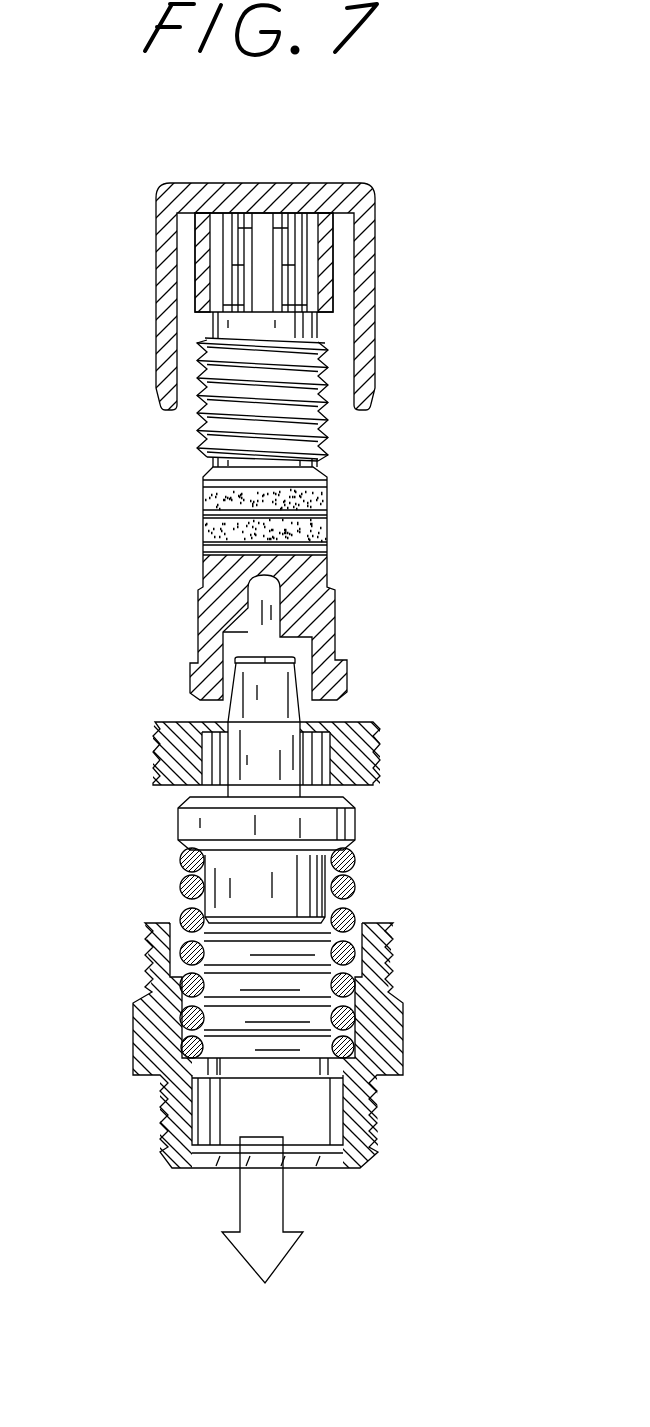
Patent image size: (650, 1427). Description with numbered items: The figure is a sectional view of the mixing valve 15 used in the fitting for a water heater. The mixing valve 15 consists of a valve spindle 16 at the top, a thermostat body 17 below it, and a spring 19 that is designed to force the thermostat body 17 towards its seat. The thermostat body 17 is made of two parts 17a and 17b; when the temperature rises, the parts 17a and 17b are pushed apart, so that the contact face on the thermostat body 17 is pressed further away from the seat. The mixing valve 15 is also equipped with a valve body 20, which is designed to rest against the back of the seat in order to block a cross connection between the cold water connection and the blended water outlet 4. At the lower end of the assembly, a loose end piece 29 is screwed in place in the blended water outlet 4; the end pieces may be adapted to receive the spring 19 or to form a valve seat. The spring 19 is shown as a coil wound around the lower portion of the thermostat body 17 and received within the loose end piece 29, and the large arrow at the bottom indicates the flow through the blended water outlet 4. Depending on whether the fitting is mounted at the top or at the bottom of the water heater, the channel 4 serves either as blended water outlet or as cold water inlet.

The blended water outlet 4 is at (195, 1170).
The mixing valve 15 is at (473, 340).
The valve spindle 16 is at (290, 263).
The thermostat body 17 is at (357, 822).
The thermostat body part 17a is at (195, 828).
The thermostat body part 17b is at (220, 705).
The spring 19 is at (355, 887).
The valve body 20 is at (340, 663).
The loose end piece 29 is at (390, 1045).